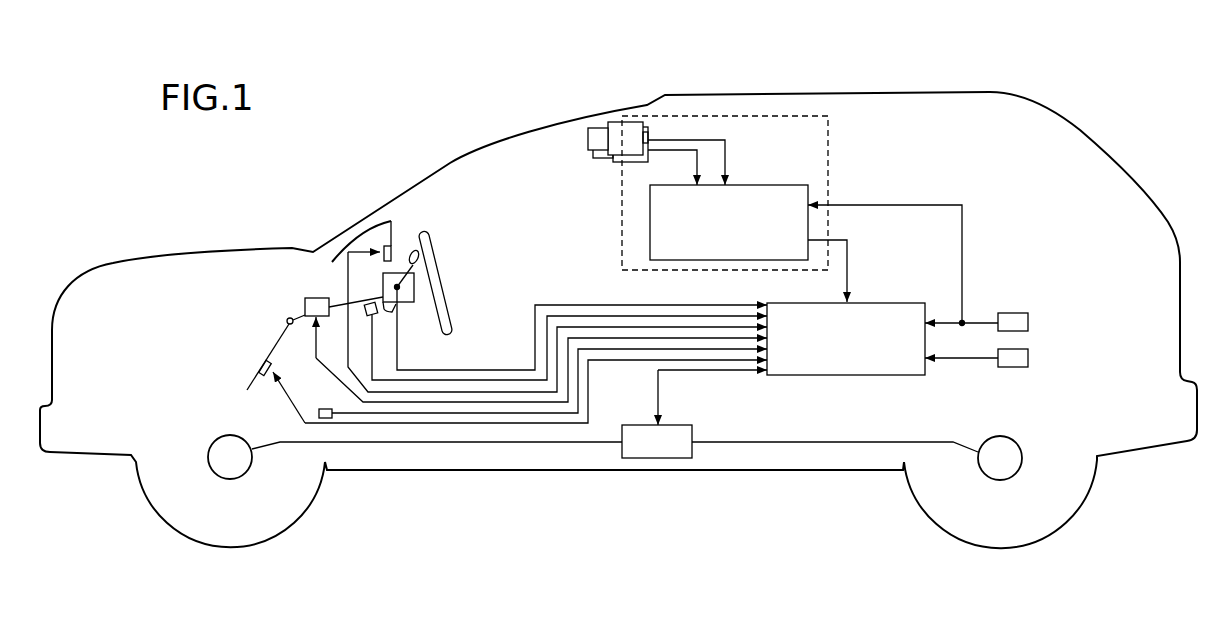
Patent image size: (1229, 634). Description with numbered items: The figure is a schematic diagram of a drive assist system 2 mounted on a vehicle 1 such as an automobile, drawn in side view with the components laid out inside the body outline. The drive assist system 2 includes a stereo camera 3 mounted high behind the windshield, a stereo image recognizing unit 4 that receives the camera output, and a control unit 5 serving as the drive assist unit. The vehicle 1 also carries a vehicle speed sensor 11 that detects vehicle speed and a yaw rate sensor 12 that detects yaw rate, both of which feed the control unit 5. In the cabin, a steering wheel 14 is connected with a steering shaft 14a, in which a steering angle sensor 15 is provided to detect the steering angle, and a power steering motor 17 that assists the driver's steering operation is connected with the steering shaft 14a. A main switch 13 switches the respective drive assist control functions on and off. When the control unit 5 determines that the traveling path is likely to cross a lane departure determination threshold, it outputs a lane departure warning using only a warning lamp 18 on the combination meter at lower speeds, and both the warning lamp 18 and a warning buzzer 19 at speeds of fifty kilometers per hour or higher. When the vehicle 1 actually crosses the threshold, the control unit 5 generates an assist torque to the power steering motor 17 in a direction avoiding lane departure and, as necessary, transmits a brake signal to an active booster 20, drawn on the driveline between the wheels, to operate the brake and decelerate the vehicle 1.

The vehicle 1 is at (1027, 38).
The drive assist system 2 is at (1007, 180).
The stereo camera 3 is at (597, 166).
The stereo image recognizing unit 4 is at (770, 185).
The control unit 5 is at (885, 303).
The vehicle speed sensor 11 is at (1028, 323).
The yaw rate sensor 12 is at (1028, 358).
The main switch 13 is at (406, 303).
The steering wheel 14 is at (441, 278).
The steering shaft 14a is at (282, 336).
The steering angle sensor 15 is at (368, 303).
The power steering motor 17 is at (268, 376).
The warning lamp 18 is at (392, 248).
The warning buzzer 19 is at (315, 298).
The active booster 20 is at (640, 425).